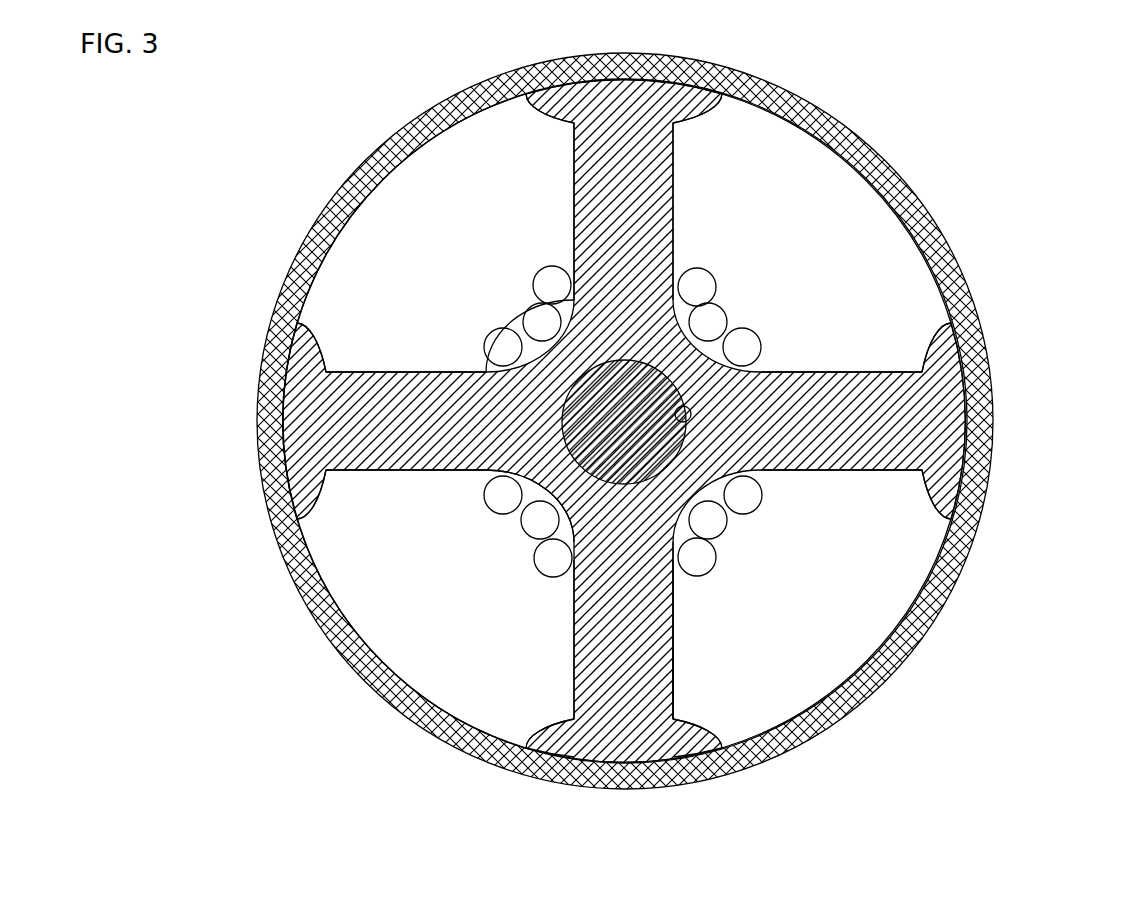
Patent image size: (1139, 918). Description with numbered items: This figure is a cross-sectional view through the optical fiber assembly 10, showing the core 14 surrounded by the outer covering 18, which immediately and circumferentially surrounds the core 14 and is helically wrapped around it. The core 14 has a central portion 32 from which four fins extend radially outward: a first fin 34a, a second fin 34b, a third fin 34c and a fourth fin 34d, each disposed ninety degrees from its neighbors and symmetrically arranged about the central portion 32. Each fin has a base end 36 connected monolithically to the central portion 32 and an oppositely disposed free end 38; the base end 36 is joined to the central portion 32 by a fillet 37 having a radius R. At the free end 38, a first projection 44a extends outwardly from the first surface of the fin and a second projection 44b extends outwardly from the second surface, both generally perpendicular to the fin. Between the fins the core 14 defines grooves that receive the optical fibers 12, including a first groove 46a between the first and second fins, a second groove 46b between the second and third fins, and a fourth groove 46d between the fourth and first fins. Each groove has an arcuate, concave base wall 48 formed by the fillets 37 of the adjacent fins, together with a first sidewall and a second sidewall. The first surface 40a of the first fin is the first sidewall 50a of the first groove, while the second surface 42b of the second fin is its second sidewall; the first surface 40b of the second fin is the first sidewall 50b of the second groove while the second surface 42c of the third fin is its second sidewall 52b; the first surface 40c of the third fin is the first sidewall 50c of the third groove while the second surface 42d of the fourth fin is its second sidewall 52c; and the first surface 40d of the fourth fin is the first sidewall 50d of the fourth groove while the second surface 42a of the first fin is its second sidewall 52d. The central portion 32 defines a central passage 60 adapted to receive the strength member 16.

The optical fiber assembly 10 is at (227, 187).
The optical fiber 12 is at (527, 535).
The core 14 is at (510, 126).
The strength member 16 is at (665, 362).
The outer covering 18 is at (273, 536).
The central portion 32 is at (540, 482).
The first fin 34a is at (538, 707).
The second fin 34b is at (315, 316).
The third fin 34c is at (725, 128).
The fourth fin 34d is at (939, 318).
The base end 36 is at (648, 567).
The fillet 37 is at (548, 337).
The free end 38 is at (676, 707).
The first surface of the first fin 40a is at (575, 657).
The first surface of the second fin 40b is at (348, 372).
The first surface of the third fin 40c is at (675, 146).
The first surface of the fourth fin 40d is at (888, 472).
The second surface of the first fin 42a is at (676, 662).
The second surface of the second fin 42b is at (355, 472).
The second surface of the third fin 42c is at (573, 144).
The second surface of the fourth fin 42d is at (887, 372).
The first projection 44a is at (556, 746).
The second projection 44b is at (710, 750).
The first groove 46a is at (397, 637).
The second groove 46b is at (392, 207).
The fourth groove 46d is at (857, 197).
The base wall 48 is at (715, 495).
The first sidewall of the first groove 50a is at (575, 607).
The first sidewall of the second groove 50b is at (402, 372).
The first sidewall of the third groove 50c is at (675, 207).
The first sidewall of the fourth groove 50d is at (828, 472).
The second sidewall of the second groove 52b is at (573, 189).
The second sidewall of the third groove 52c is at (841, 372).
The second sidewall of the fourth groove 52d is at (676, 620).
The central passage 60 is at (691, 420).
The radius R is at (541, 334).